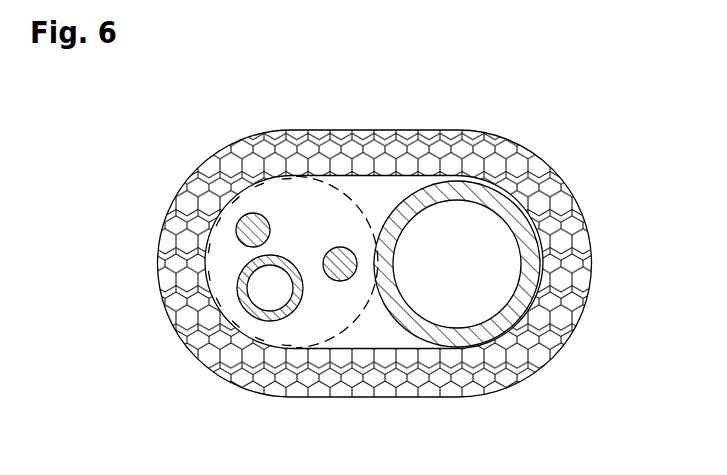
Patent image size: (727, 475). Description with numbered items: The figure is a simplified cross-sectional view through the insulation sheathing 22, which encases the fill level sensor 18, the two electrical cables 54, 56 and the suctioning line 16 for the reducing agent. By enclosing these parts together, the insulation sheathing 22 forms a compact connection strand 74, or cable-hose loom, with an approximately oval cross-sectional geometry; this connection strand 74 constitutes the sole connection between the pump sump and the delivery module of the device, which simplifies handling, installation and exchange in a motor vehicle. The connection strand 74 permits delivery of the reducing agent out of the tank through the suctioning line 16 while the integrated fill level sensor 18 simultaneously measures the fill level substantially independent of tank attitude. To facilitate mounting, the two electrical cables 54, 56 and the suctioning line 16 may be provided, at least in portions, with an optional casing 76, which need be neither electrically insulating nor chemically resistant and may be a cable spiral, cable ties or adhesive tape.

The suctioning line 16 is at (271, 307).
The fill level sensor 18 is at (472, 304).
The insulation sheathing 22 is at (426, 389).
The electrical cable 54 is at (252, 214).
The electrical cable 56 is at (345, 249).
The connection strand 74 is at (567, 102).
The casing 76 is at (350, 352).